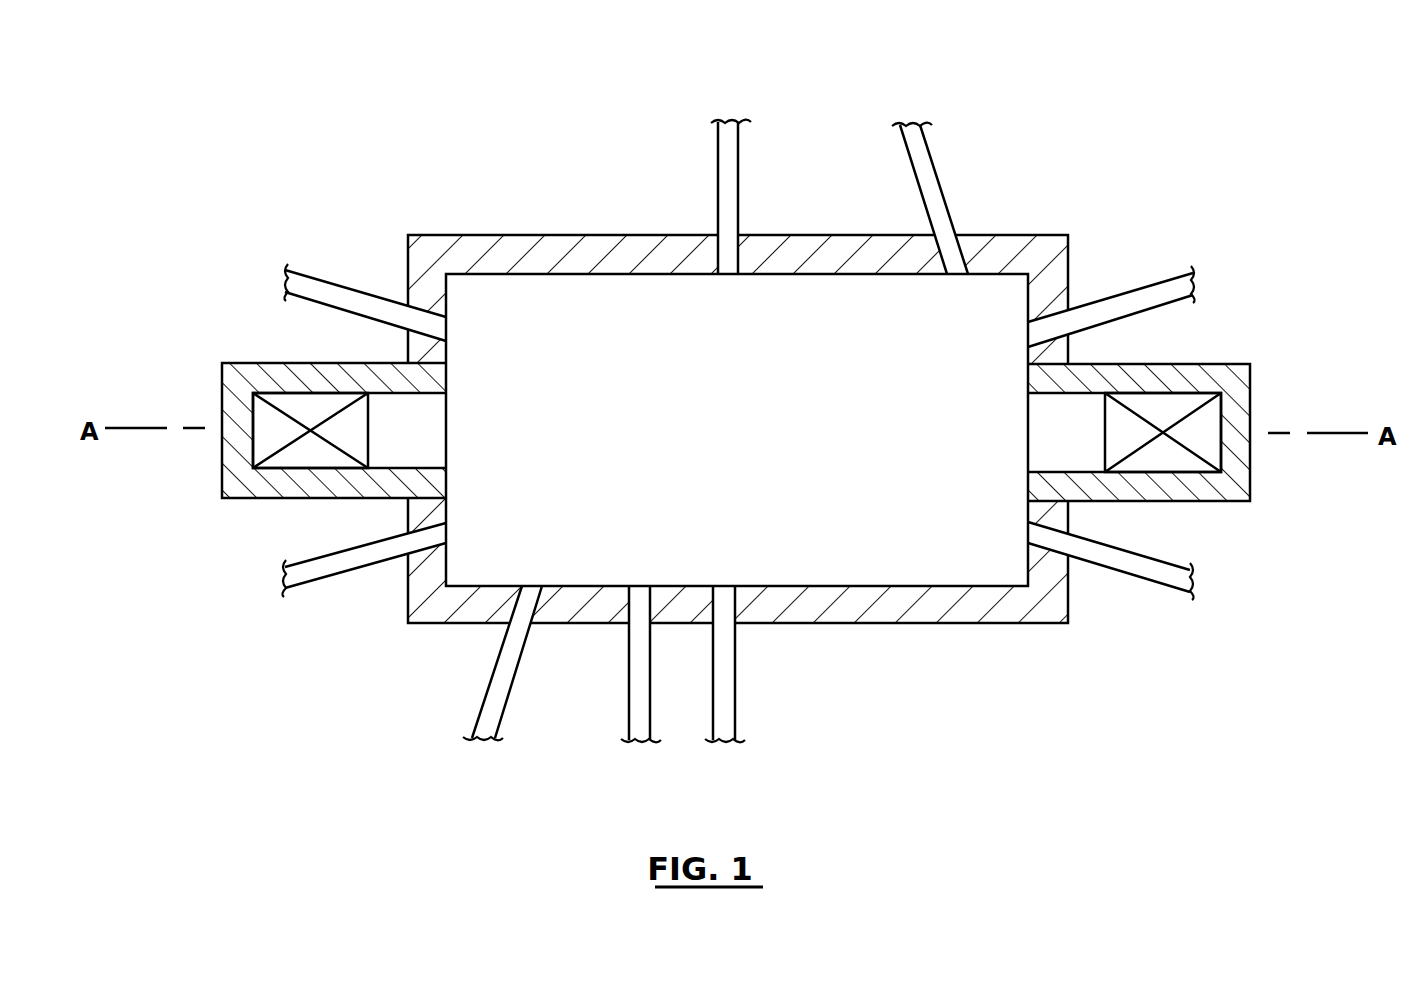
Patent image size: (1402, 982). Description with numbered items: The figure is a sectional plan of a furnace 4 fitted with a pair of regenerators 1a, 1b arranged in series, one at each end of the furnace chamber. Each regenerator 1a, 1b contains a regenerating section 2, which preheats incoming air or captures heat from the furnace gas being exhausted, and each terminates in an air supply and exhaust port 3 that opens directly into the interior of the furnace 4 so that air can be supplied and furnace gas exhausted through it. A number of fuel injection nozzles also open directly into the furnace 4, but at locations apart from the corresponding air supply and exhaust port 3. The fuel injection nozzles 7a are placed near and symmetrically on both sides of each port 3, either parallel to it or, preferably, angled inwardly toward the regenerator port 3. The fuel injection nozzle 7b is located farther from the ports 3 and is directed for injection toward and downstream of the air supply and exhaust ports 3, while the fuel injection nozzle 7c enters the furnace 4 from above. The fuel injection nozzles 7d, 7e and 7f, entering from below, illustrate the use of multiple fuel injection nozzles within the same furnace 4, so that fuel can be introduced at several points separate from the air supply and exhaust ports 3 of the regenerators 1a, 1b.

The regenerator 1a is at (222, 388).
The regenerator 1b is at (1250, 417).
The regenerating section 2 is at (281, 428).
The air supply and exhaust port 3 is at (446, 442).
The furnace 4 is at (1025, 236).
The fuel injection nozzle 7a is at (352, 290).
The fuel injection nozzle 7b is at (943, 178).
The fuel injection nozzle 7c is at (716, 176).
The fuel injection nozzle 7d is at (500, 720).
The fuel injection nozzle 7e is at (652, 715).
The fuel injection nozzle 7f is at (738, 714).